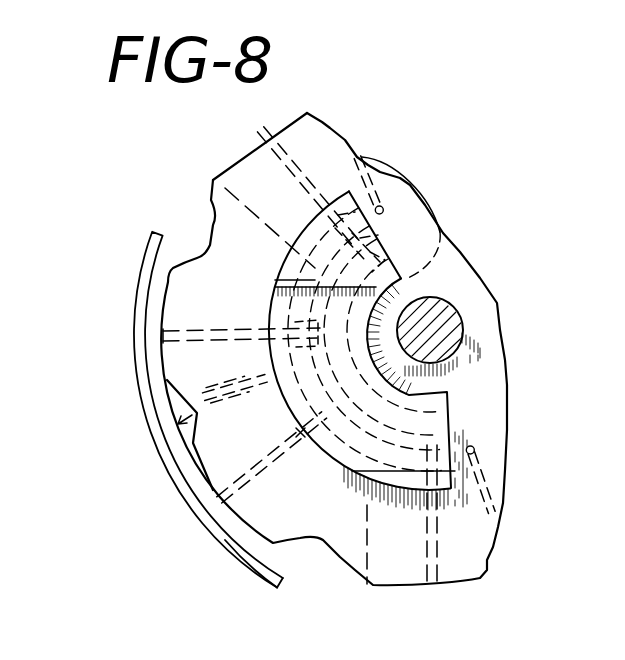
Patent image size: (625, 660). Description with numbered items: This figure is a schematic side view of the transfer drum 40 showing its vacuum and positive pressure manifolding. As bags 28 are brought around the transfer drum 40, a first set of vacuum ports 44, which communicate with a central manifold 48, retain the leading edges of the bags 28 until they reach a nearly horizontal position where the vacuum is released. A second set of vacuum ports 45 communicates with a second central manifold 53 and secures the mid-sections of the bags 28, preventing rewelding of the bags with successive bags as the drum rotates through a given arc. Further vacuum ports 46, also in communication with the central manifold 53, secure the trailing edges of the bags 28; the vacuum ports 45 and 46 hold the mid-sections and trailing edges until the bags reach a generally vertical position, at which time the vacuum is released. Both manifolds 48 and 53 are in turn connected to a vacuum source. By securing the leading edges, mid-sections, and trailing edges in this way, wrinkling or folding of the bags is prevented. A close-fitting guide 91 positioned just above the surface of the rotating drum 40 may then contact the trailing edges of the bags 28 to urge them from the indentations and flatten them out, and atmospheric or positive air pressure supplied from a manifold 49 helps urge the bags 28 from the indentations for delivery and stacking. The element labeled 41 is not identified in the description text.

The bags 28 is at (165, 358).
The transfer drum 40 is at (477, 243).
The shaft 41 is at (467, 323).
The first set of vacuum ports 44 is at (287, 157).
The second set of vacuum ports 45 is at (380, 165).
The vacuum ports 46 is at (205, 327).
The central manifold 48 is at (437, 237).
The manifold 49 is at (367, 588).
The central manifold 53 is at (211, 181).
The close-fitting guide 91 is at (243, 568).